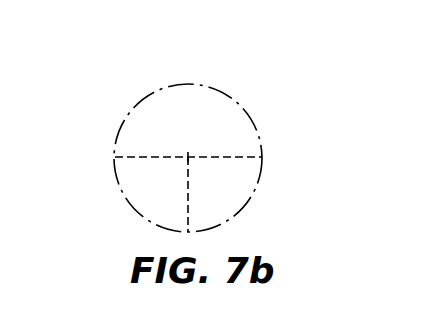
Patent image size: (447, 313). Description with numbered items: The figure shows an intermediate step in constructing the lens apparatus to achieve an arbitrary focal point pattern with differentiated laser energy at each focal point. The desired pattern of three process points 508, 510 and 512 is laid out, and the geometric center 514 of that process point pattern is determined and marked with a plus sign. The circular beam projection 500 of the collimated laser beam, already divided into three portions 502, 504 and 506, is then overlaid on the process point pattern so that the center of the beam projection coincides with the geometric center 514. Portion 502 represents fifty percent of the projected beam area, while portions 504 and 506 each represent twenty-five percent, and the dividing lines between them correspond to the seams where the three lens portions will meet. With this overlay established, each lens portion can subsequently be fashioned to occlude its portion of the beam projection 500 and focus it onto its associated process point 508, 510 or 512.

The beam projection 500 is at (142, 98).
The beam projection portion 502 is at (115, 157).
The beam projection portion 504 is at (131, 207).
The beam projection portion 506 is at (233, 220).
The process point 508 is at (185, 119).
The process point 510 is at (165, 174).
The process point 512 is at (220, 186).
The geometric center 514 is at (189, 157).